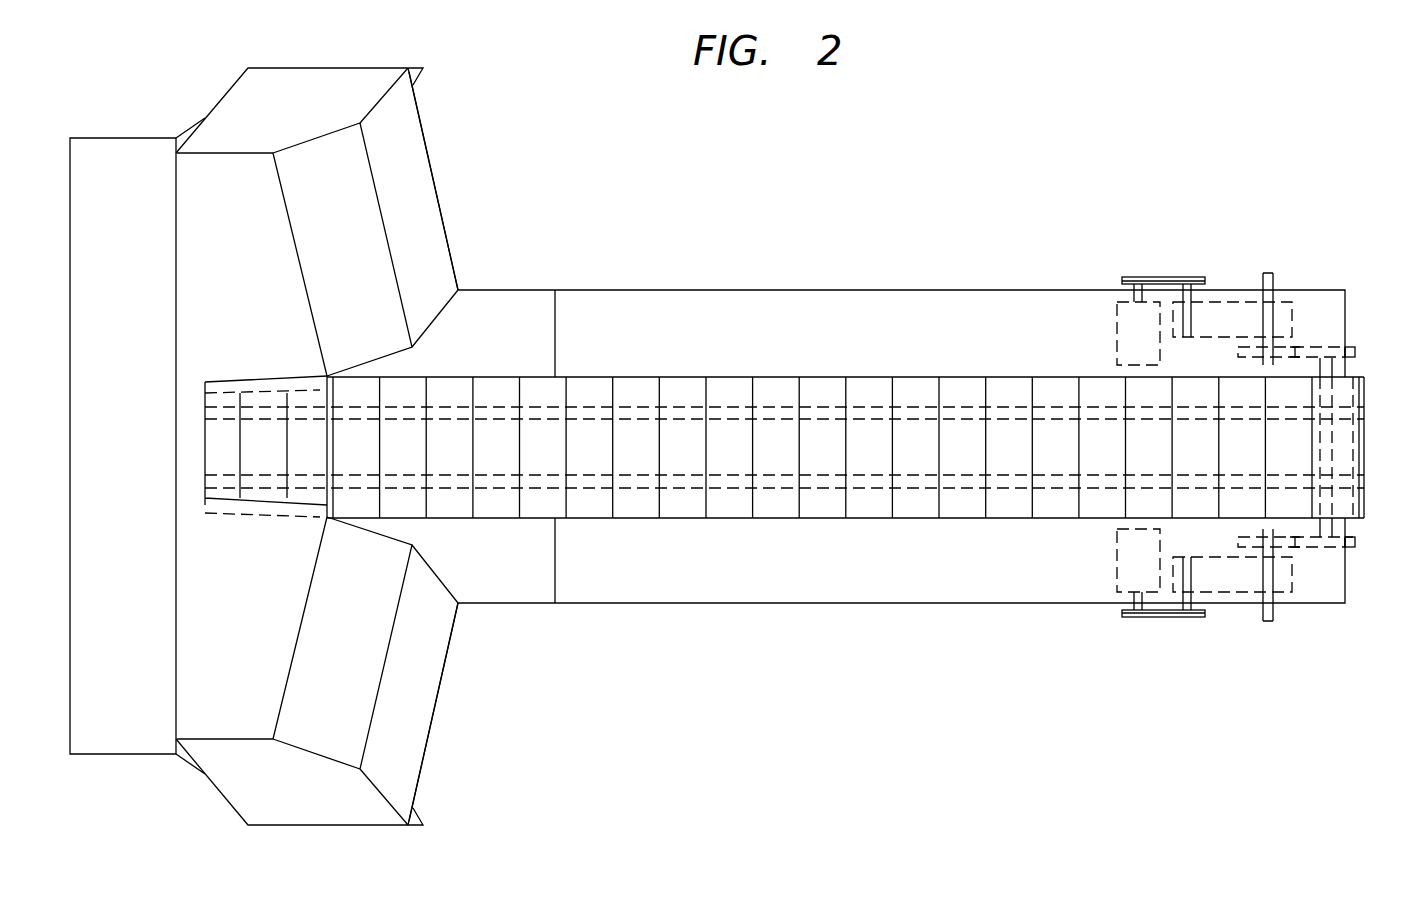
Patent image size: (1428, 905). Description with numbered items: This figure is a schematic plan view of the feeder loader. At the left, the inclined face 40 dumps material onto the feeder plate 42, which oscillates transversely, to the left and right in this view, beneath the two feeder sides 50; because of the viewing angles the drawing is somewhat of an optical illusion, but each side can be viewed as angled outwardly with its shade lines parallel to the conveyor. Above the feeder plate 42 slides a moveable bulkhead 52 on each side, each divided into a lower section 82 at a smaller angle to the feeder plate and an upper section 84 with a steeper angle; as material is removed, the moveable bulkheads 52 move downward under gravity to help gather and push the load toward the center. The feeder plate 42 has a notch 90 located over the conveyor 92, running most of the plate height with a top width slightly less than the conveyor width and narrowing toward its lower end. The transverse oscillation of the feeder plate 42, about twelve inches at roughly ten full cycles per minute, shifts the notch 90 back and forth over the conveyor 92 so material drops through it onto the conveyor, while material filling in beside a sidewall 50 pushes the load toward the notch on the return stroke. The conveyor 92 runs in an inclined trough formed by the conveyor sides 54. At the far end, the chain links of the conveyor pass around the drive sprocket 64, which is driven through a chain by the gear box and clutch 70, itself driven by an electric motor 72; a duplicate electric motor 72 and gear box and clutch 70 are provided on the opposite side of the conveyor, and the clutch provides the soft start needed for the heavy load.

The inclined face 40 is at (104, 204).
The feeder plate 42 is at (226, 332).
The feeder sides 50 is at (281, 117).
The moveable bulkhead 52 is at (443, 170).
The conveyor sides 54 is at (587, 352).
The drive sprocket 64 is at (1353, 408).
The gear box and clutch 70 is at (1212, 334).
The electric motor 72 is at (1122, 349).
The lower section 82 is at (334, 342).
The upper section 84 is at (411, 284).
The notch 90 is at (205, 472).
The conveyor 92 is at (667, 454).